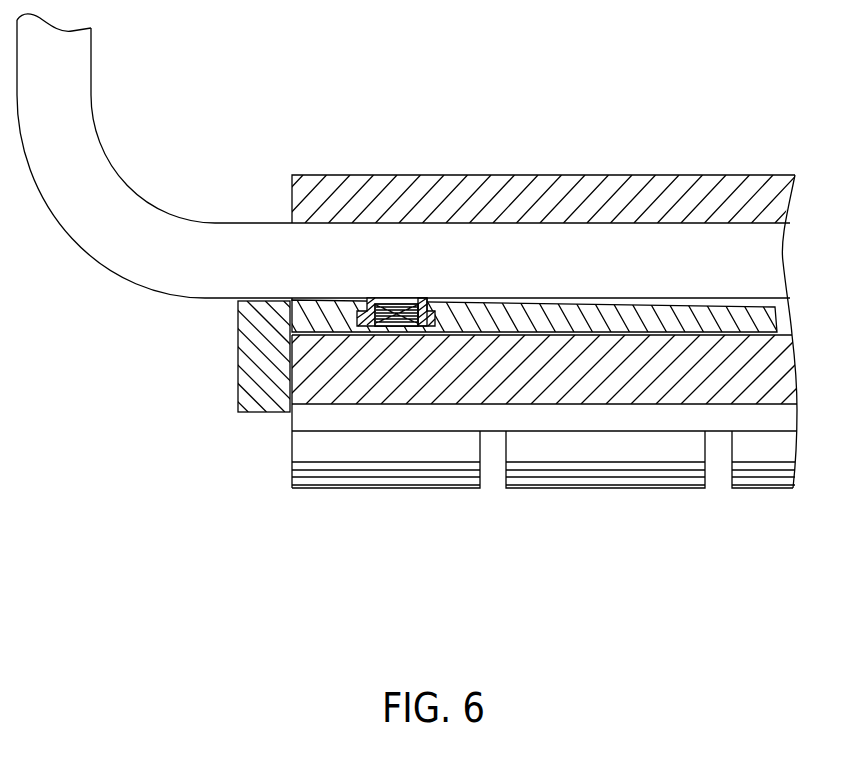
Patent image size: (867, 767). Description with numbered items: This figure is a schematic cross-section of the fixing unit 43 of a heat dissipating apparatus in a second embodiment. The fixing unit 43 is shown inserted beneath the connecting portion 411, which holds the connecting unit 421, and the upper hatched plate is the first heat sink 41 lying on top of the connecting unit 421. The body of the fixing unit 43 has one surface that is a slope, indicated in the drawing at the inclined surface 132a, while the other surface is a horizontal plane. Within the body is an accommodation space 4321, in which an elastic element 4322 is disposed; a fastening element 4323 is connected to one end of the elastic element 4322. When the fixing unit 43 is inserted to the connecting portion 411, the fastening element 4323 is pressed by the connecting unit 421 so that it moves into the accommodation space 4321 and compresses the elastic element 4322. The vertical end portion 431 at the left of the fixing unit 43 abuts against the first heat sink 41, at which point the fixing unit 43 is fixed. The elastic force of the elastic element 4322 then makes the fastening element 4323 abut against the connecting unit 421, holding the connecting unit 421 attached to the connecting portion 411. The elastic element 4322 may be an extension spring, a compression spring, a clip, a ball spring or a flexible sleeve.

The first heat sink 41 is at (550, 168).
The connecting portion 411 is at (778, 305).
The connecting unit 421 is at (117, 188).
The fixing unit 43 is at (484, 369).
The end portion 431 is at (250, 362).
The accommodation space 4321 is at (352, 300).
The elastic element 4322 is at (382, 300).
The fastening element 4323 is at (421, 299).
The inclined surface 132a is at (686, 304).